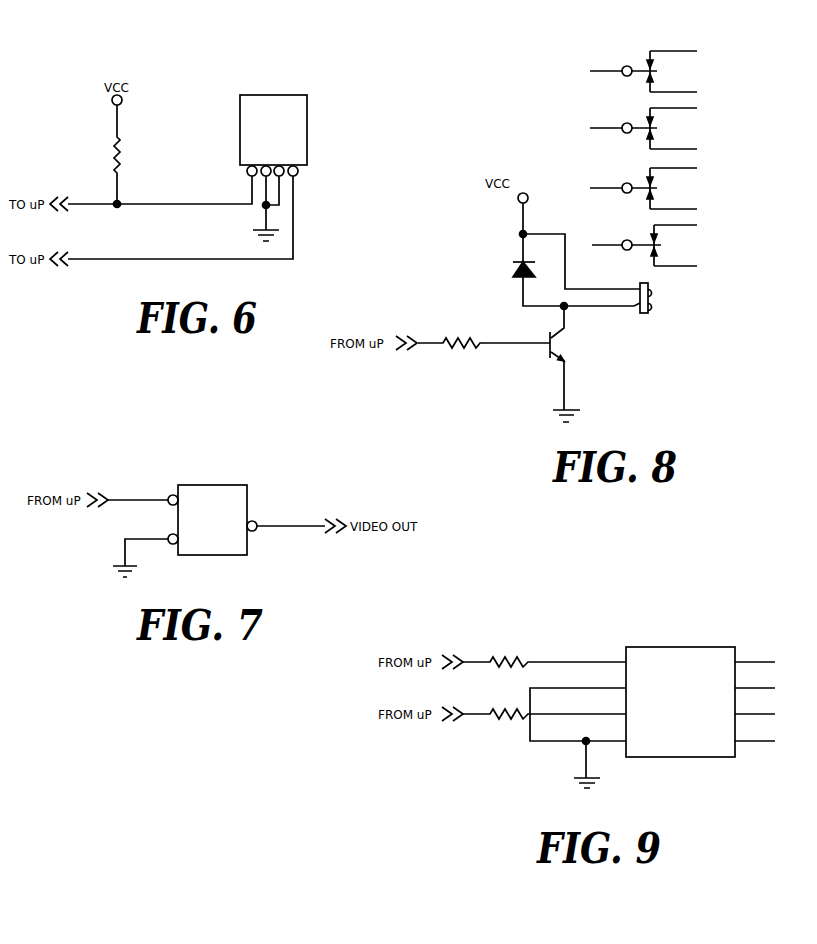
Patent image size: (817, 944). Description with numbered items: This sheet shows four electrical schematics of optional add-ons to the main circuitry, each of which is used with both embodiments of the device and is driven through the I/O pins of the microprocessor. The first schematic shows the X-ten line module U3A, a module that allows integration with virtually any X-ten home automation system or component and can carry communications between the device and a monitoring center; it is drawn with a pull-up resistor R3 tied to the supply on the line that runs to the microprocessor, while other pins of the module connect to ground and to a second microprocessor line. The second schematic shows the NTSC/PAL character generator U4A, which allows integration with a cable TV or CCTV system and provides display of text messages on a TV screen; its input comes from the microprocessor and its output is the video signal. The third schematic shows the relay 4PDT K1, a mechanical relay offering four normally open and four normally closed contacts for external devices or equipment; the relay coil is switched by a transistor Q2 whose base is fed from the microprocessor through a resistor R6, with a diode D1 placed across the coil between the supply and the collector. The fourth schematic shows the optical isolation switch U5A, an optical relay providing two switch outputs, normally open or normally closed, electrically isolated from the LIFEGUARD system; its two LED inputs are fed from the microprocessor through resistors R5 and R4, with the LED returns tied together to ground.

In FIG. 6, the resistor R3 is at (154, 154).
In FIG. 6, the X-10 line module U3A is at (281, 117).
In FIG. 7, the NTSC/PAL character generator U4A is at (212, 500).
In FIG. 8, the relay 4PDT K1 is at (648, 158).
In FIG. 8, the diode 1N4148 D1 is at (495, 254).
In FIG. 8, the transistor 2N3904 Q2 is at (574, 358).
In FIG. 8, the resistor R6 is at (484, 359).
In FIG. 9, the resistor R5 is at (539, 638).
In FIG. 9, the resistor R4 is at (540, 736).
In FIG. 9, the optical isolation switch U5A is at (675, 678).